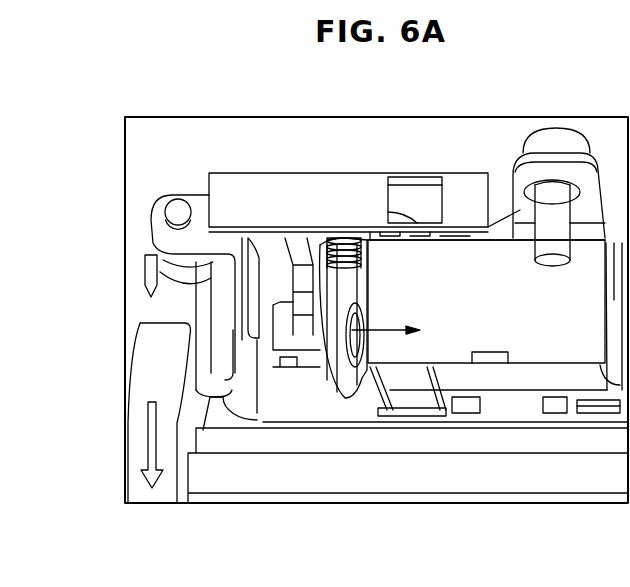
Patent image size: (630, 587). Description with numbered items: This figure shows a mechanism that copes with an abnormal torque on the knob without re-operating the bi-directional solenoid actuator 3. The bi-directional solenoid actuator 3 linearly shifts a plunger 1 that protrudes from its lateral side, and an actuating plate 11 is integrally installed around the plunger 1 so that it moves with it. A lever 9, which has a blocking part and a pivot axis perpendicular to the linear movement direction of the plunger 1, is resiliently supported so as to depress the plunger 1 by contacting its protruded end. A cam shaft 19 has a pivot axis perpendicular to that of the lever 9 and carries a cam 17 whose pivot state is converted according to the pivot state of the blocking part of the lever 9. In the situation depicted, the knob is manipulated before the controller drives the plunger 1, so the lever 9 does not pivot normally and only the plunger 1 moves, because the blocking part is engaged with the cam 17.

The plunger 1 is at (287, 340).
The bi-directional solenoid actuator 3 is at (502, 380).
The lever 9 is at (223, 310).
The actuating plate 11 is at (334, 238).
The cam 17 is at (138, 373).
The cam shaft 19 is at (378, 484).